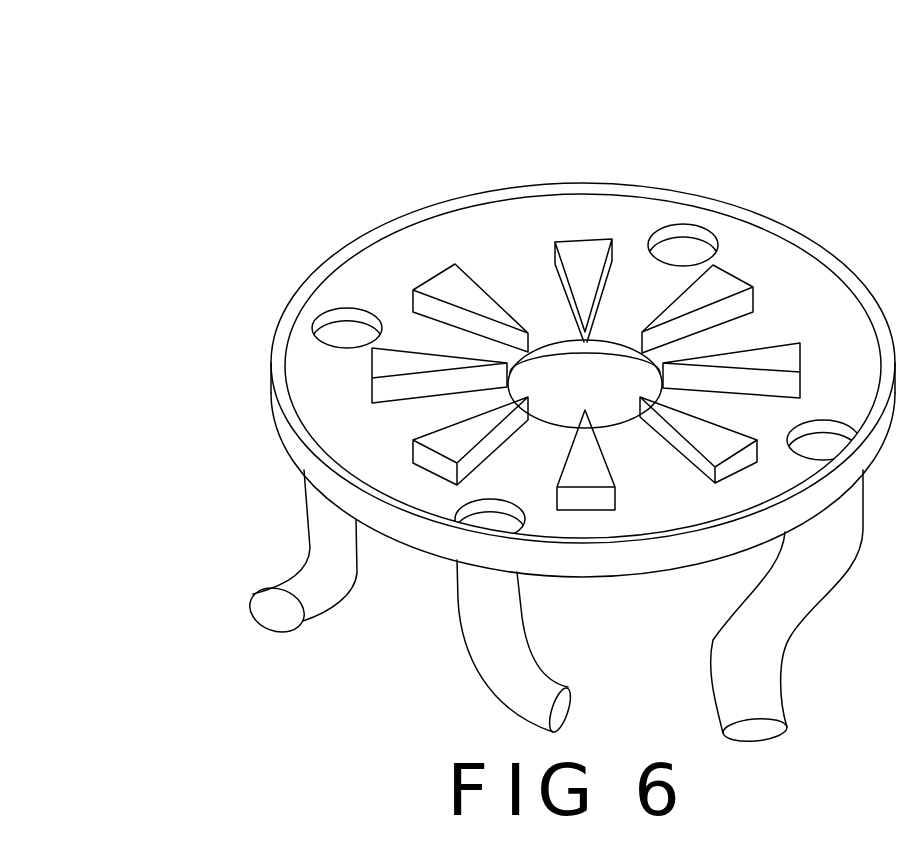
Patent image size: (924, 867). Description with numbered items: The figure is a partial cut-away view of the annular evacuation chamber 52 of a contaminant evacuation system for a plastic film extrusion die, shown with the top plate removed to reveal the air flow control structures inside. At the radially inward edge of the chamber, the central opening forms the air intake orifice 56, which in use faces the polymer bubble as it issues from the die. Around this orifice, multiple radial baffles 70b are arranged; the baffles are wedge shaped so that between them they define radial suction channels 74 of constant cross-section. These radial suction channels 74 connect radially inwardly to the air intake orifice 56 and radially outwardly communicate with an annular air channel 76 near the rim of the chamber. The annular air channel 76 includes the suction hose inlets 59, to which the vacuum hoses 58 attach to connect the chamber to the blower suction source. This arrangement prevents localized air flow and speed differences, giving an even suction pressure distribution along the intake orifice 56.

The annular evacuation chamber 52 is at (398, 237).
The air intake orifice 56 is at (557, 343).
The vacuum hoses 58 is at (303, 513).
The suction hose inlets 59 is at (345, 331).
The radial baffles 70b is at (587, 260).
The radial suction channels 74 is at (455, 336).
The annular air channel 76 is at (343, 415).